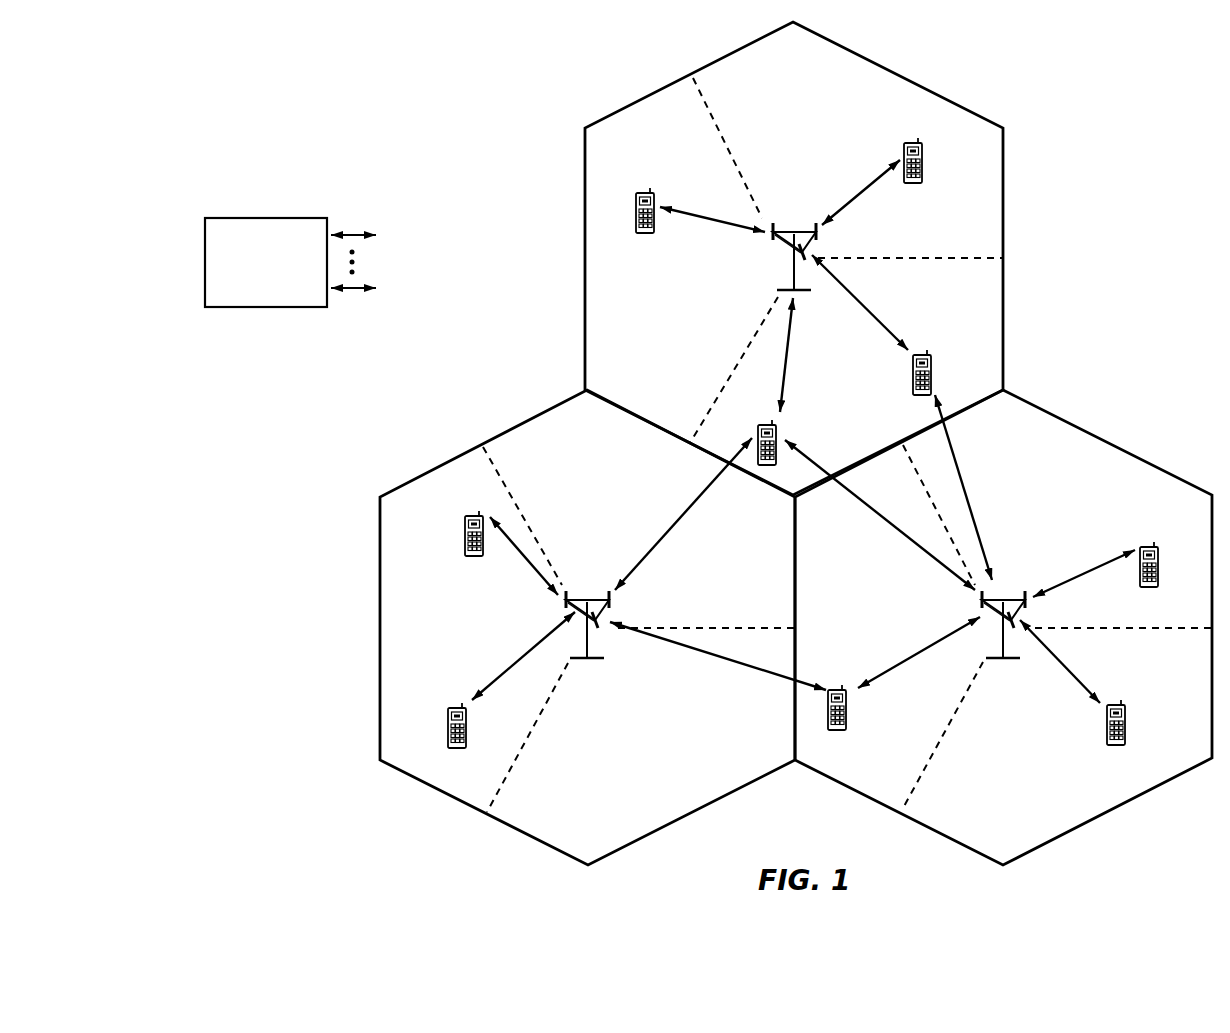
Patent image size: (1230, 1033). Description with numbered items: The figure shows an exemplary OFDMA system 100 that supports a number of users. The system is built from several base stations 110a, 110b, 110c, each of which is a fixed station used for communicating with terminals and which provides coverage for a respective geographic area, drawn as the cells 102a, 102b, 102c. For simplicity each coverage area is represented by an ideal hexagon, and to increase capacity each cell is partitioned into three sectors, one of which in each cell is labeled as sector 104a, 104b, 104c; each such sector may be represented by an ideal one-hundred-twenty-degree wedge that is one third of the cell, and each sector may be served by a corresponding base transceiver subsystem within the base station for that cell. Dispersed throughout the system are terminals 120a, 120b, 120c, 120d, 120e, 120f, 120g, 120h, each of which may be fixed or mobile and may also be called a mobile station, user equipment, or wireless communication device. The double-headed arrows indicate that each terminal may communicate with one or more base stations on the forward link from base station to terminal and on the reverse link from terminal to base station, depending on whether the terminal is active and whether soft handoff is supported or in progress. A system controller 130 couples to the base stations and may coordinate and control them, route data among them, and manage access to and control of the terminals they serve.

The OFDMA system 100 is at (1168, 49).
The coverage area (cell) 102a is at (897, 73).
The coverage area (cell) 102b is at (483, 446).
The coverage area (cell) 102c is at (1108, 440).
The sector 104a is at (808, 60).
The sector 104b is at (633, 386).
The sector 104c is at (998, 386).
The base station 110a is at (789, 229).
The base station 110b is at (584, 597).
The base station 110c is at (1004, 595).
The terminal 120a is at (906, 143).
The terminal 120b is at (637, 193).
The terminal 120c is at (758, 425).
The terminal 120d is at (915, 355).
The terminal 120e is at (466, 516).
The terminal 120f is at (449, 708).
The terminal 120g is at (830, 690).
The terminal 120h is at (1143, 547).
The system controller 130 is at (260, 218).